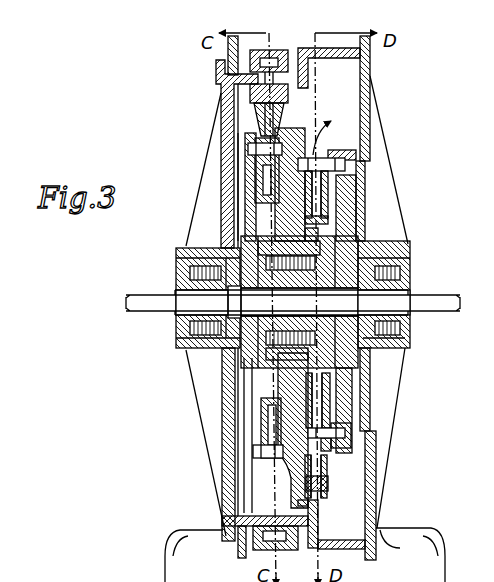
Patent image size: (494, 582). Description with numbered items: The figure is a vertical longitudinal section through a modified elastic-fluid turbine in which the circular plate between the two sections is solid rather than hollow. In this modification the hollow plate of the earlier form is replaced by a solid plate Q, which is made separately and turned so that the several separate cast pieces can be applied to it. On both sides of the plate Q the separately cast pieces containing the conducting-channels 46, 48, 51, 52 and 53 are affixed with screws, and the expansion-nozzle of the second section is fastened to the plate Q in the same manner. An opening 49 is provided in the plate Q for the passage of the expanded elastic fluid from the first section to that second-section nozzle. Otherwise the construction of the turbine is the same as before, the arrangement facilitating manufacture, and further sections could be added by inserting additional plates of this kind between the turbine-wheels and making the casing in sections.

The conducting-channel cast piece 46 is at (258, 176).
The conducting-channel cast piece 48 is at (263, 402).
The opening 49 is at (296, 467).
The conducting-channel cast piece 51 is at (319, 477).
The conducting-channel cast piece 52 is at (323, 383).
The conducting-channel cast piece 53 is at (321, 198).
The solid plate Q is at (287, 100).